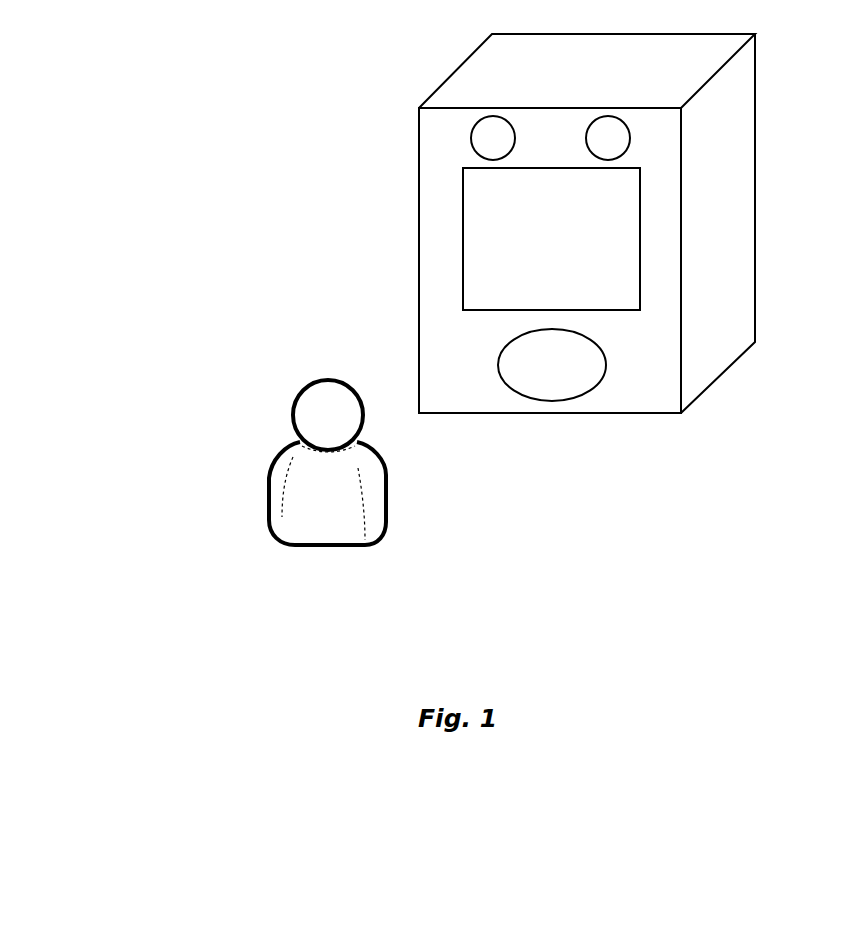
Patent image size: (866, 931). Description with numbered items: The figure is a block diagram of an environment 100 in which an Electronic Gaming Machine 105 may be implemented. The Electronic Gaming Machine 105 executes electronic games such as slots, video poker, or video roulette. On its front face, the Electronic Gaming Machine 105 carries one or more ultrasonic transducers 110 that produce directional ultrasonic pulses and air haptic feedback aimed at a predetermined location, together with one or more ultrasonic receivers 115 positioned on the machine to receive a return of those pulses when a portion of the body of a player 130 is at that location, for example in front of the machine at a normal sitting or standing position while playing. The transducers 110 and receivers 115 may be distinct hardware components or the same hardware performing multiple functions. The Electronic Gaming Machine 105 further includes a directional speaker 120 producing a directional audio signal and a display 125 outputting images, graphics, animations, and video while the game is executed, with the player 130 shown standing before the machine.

The environment 100 is at (181, 169).
The Electronic Gaming Machine 105 is at (587, 223).
The ultrasonic transducer 110 is at (471, 137).
The ultrasonic receiver 115 is at (631, 137).
The directional speaker 120 is at (552, 400).
The display 125 is at (551, 239).
The player 130 is at (303, 543).